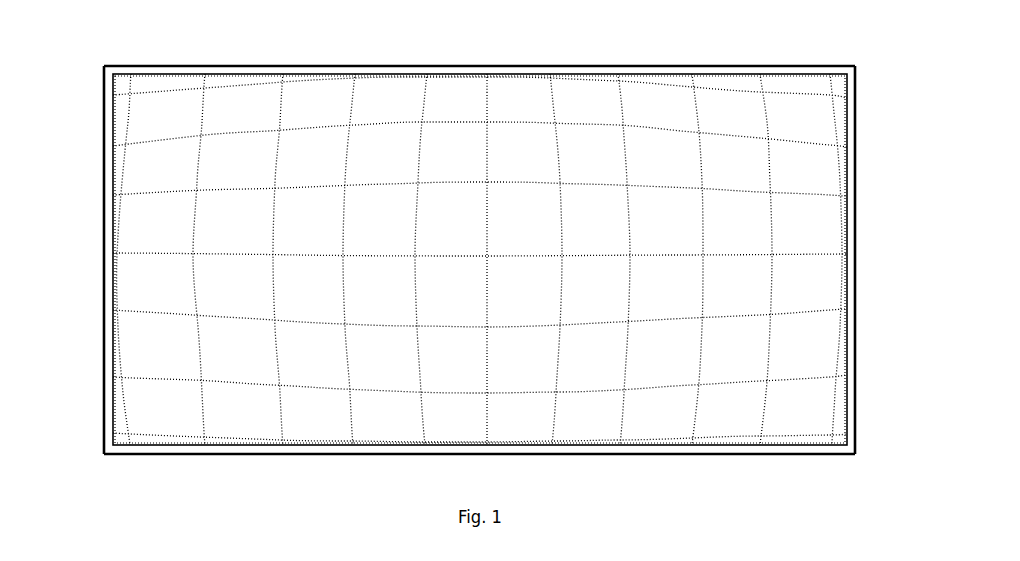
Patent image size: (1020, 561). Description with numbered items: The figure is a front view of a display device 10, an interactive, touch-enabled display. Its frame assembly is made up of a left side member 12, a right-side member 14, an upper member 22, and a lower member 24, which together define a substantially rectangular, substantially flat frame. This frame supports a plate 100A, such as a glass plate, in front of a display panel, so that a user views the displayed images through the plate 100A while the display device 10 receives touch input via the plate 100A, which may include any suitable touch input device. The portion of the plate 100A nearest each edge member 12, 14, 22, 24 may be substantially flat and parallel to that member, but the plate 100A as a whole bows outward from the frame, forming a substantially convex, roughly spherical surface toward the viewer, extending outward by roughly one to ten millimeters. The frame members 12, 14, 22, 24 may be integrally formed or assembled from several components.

The display device 10 is at (498, 279).
The left side member 12 is at (107, 359).
The right-side member 14 is at (855, 317).
The upper member 22 is at (457, 66).
The lower member 24 is at (588, 454).
The plate 100A is at (152, 222).